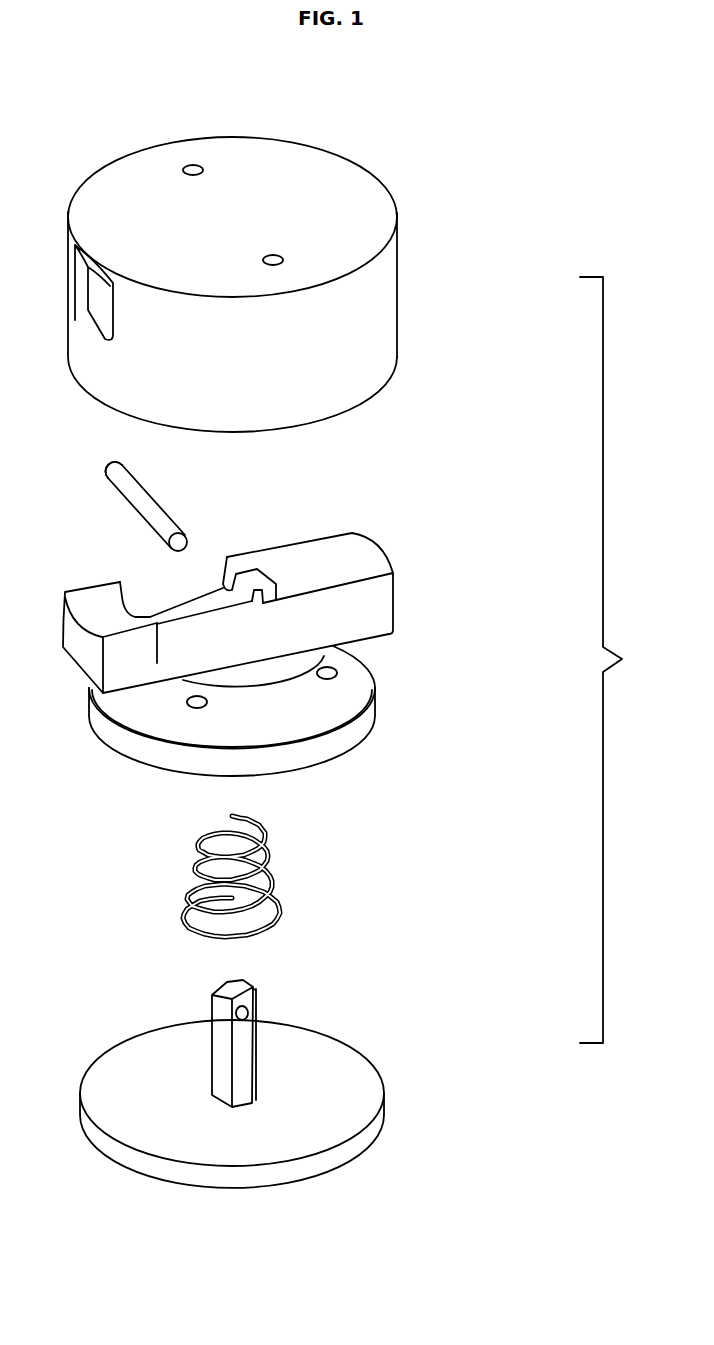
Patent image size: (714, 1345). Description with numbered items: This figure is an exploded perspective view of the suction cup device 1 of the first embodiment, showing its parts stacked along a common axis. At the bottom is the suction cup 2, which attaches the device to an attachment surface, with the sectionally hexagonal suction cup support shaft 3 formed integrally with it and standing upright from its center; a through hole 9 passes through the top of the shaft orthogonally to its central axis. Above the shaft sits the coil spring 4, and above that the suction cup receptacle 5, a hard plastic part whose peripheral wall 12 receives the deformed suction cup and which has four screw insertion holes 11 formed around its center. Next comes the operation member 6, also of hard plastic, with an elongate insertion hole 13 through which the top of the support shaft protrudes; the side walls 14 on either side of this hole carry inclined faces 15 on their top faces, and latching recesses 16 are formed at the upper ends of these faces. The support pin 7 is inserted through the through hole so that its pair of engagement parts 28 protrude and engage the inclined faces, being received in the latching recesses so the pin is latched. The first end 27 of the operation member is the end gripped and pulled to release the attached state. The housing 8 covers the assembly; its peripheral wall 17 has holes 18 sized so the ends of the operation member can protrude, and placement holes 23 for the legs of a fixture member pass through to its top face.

The suction cup device 1 is at (612, 660).
The suction cup 2 is at (241, 1089).
The suction cup support shaft 3 is at (263, 1043).
The coil spring 4 is at (280, 898).
The suction cup receptacle 5 is at (274, 733).
The operation member 6 is at (238, 658).
The support pin 7 is at (196, 500).
The housing 8 is at (395, 307).
The through hole 9 is at (245, 1013).
The screw insertion holes 11 is at (198, 705).
The peripheral wall 12 is at (360, 730).
The insertion hole 13 is at (160, 665).
The side walls 14 is at (187, 597).
The inclined faces 15 is at (152, 615).
The latching recesses 16 is at (222, 588).
The peripheral wall 17 is at (238, 261).
The holes 18 is at (100, 298).
The placement holes 23 is at (197, 166).
The first end 27 is at (372, 565).
The engagement parts 28 is at (130, 482).